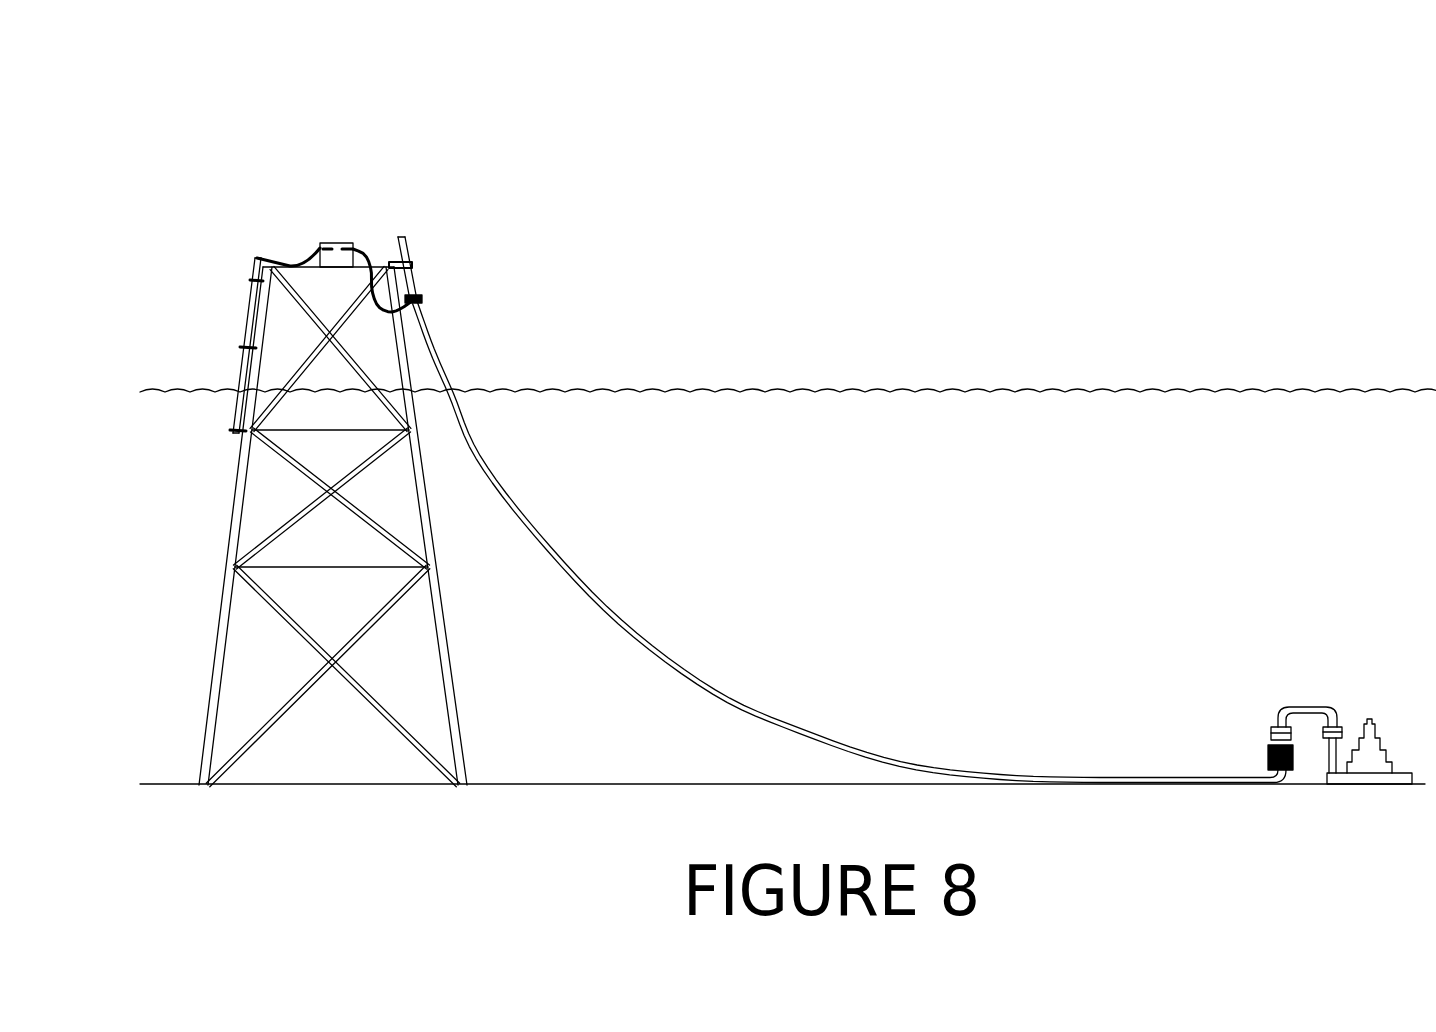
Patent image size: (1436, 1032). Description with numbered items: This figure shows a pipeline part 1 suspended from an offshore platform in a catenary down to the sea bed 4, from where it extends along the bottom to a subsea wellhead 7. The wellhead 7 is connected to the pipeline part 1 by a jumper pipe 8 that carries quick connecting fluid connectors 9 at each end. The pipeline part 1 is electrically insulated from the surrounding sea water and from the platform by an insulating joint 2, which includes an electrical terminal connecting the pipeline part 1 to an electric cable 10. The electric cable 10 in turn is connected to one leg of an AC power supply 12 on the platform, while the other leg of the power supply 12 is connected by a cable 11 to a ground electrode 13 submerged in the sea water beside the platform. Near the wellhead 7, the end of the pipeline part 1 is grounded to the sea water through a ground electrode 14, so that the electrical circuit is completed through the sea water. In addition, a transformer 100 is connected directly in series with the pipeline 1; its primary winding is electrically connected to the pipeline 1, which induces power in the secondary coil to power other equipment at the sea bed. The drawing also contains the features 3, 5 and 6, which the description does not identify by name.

The pipeline part 1 is at (849, 493).
The insulating joint 2 is at (486, 257).
The J-tube 3 is at (485, 215).
The sea bed 4 is at (782, 535).
The platform jacket 5 is at (492, 457).
The sea surface 6 is at (788, 319).
The subsea wellhead 7 is at (1292, 491).
The jumper pipe 8 is at (1208, 428).
The quick connecting fluid connectors 9 is at (1110, 438).
The electric cable 10 is at (396, 210).
The cable 11 is at (250, 197).
The AC power supply 12 is at (258, 157).
The ground electrode 13 is at (204, 318).
The ground electrode 14 is at (1120, 489).
The transformer 100 is at (1200, 810).